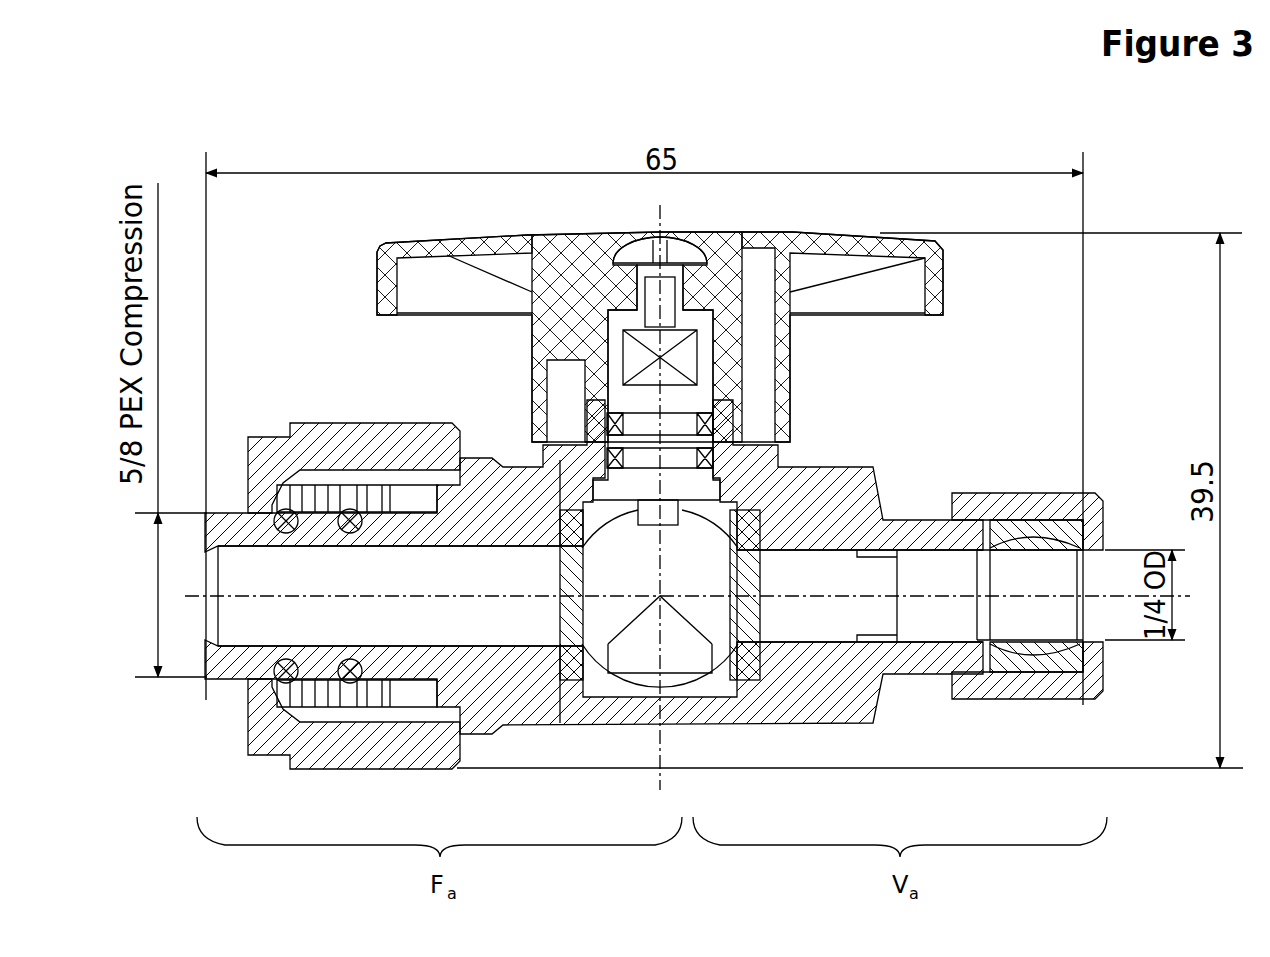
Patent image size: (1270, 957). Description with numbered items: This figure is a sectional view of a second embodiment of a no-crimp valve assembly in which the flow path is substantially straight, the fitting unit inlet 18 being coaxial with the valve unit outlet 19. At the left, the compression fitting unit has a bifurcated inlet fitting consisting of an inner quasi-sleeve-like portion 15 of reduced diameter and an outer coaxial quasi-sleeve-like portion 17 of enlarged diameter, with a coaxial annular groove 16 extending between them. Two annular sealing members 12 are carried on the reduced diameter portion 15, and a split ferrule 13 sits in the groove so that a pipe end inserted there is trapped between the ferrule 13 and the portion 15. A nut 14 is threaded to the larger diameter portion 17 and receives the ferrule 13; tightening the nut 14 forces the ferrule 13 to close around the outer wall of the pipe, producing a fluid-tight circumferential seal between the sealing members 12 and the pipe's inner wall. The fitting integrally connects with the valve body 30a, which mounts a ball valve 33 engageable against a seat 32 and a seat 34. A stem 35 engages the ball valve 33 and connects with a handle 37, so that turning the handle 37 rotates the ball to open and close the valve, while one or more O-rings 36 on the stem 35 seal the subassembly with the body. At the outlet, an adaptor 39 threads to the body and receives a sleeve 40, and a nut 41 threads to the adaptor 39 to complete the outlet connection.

The annular sealing members 12 is at (277, 516).
The split ferrule 13 is at (290, 448).
The nut 14 is at (263, 745).
The inner quasi-sleeve-like portion 15 is at (225, 665).
The coaxial annular groove 16 is at (275, 690).
The outer quasi-sleeve-like portion 17 is at (420, 470).
The fitting unit inlet 18 is at (237, 565).
The valve unit outlet 19 is at (1060, 575).
The valve body 30a is at (512, 705).
The seat 32 is at (578, 658).
The ball valve 33 is at (720, 658).
The seat 34 is at (745, 515).
The stem 35 is at (700, 392).
The O-rings 36 is at (718, 420).
The handle 37 is at (826, 232).
The adaptor 39 is at (887, 491).
The sleeve 40 is at (1055, 662).
The nut 41 is at (1062, 512).